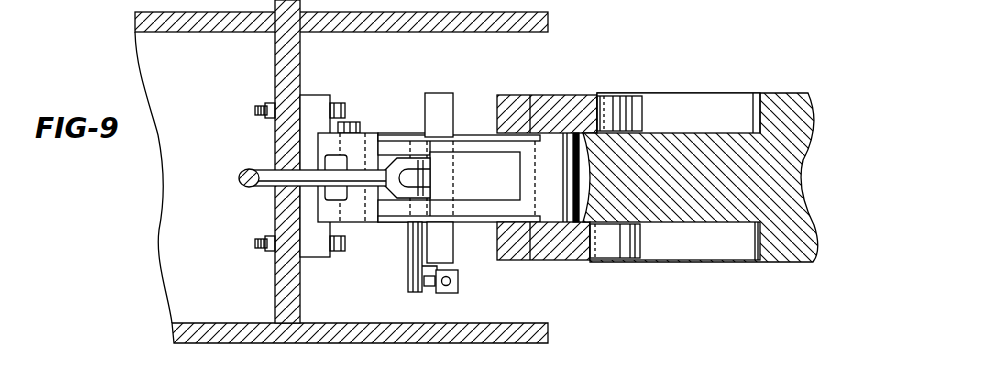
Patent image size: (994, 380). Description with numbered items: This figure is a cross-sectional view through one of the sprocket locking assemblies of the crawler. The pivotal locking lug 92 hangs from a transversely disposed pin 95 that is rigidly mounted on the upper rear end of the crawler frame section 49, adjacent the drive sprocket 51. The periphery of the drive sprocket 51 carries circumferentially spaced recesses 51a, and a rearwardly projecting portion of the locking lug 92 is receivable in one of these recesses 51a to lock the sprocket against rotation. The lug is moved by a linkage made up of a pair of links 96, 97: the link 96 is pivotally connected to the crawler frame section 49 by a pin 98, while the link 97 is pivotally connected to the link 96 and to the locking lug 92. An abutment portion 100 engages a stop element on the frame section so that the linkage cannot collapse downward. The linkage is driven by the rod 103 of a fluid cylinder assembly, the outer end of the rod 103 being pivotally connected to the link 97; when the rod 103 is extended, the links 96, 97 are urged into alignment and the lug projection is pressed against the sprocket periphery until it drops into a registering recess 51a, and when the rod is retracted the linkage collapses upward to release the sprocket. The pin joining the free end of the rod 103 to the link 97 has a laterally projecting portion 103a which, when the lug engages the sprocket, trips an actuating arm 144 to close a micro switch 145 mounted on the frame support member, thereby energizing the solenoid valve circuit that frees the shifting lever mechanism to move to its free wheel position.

The crawler frame section 49 is at (188, 34).
The drive sprocket 51 is at (713, 142).
The recesses 51a is at (624, 113).
The pivotal locking lug 92 is at (520, 253).
The pin 95 is at (568, 208).
The link 96 is at (349, 166).
The link 97 is at (484, 152).
The pin 98 is at (348, 122).
The abutment portion 100 is at (447, 248).
The rod 103 is at (263, 188).
The laterally projecting portion 103a is at (413, 262).
The actuating arm 144 is at (432, 287).
The micro switch 145 is at (457, 290).